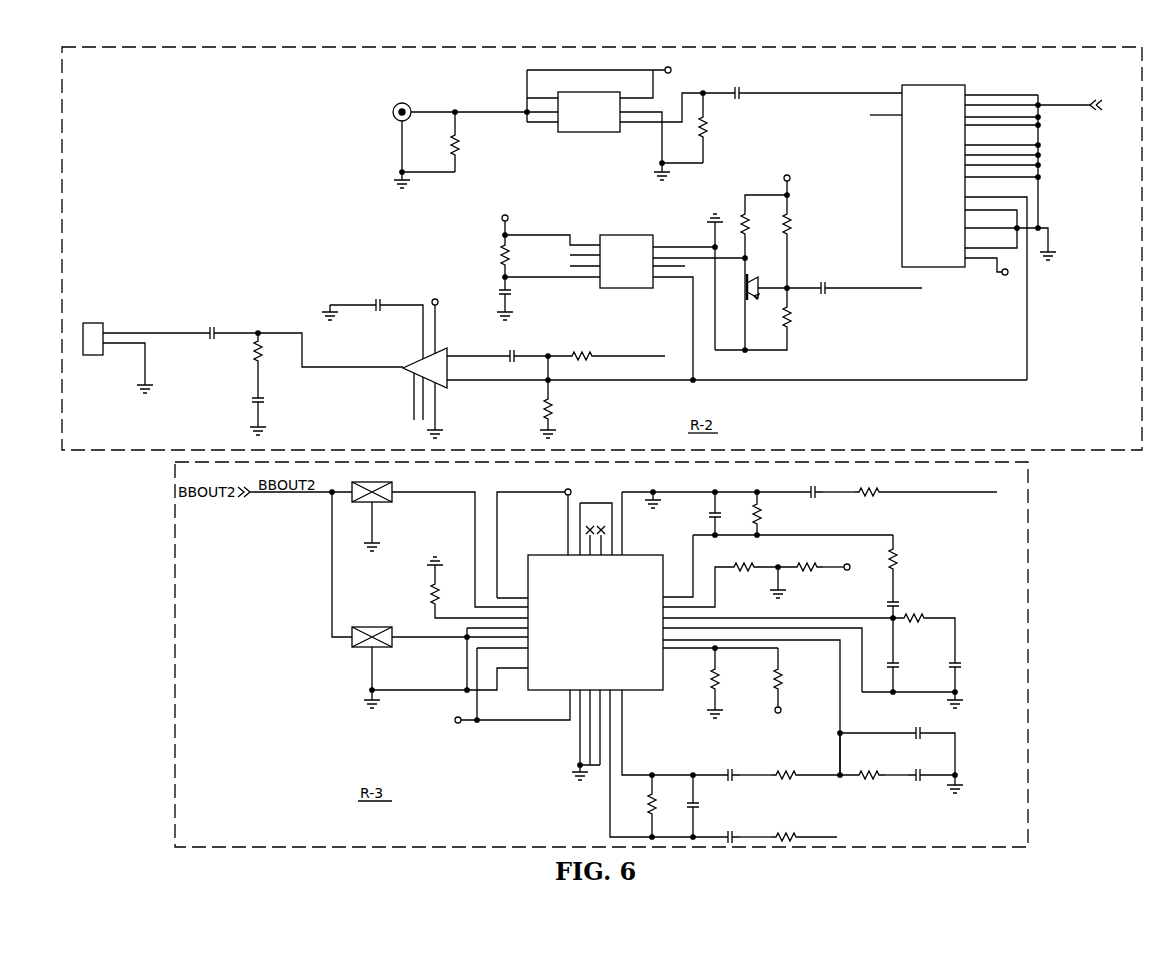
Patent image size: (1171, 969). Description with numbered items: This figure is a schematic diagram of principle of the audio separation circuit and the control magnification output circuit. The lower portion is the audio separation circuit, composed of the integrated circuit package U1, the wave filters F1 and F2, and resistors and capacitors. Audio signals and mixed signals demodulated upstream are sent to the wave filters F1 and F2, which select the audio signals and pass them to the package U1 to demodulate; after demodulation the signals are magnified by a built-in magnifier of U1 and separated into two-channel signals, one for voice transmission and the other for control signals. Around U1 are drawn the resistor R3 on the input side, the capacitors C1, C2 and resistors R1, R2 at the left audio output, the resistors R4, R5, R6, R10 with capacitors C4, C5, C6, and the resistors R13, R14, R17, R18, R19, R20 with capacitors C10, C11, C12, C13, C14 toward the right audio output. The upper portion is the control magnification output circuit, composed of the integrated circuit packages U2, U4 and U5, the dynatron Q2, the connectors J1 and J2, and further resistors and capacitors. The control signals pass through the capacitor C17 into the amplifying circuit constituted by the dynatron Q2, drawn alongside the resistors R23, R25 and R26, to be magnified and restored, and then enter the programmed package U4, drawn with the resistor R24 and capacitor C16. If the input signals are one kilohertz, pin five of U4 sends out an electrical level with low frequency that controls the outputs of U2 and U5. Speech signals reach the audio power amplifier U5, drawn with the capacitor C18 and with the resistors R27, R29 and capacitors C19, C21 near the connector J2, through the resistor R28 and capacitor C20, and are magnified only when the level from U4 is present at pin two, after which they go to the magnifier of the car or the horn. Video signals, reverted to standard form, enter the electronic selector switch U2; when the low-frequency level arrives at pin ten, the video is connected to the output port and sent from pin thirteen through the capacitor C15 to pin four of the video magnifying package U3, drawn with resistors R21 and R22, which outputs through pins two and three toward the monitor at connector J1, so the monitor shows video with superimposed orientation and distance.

The monitor video jack J1 is at (438, 135).
The resistor R21 is at (471, 141).
The video magnified integrated circuit package U3 is at (614, 122).
The resistor R22 is at (719, 127).
The capacitor C15 is at (802, 85).
The integrated circuit package U2 is at (1004, 223).
The resistor R23 is at (764, 273).
The resistor R25 is at (800, 223).
The dynatron Q2 is at (754, 287).
The resistor R26 is at (769, 319).
The capacitor C17 is at (854, 280).
The integrated circuit package U4 is at (625, 298).
The resistor R24 is at (517, 239).
The capacitor C16 is at (519, 301).
The alarm jack J2 is at (137, 348).
The capacitor C19 is at (300, 339).
The resistor R27 is at (275, 361).
The capacitor C21 is at (274, 412).
The capacitor C18 is at (372, 321).
The integrated circuit package U5 is at (688, 359).
The capacitor C20 is at (532, 348).
The resistor R28 is at (616, 347).
The resistor R29 is at (562, 397).
The wave filter F1 is at (434, 536).
The wave filter F2 is at (434, 650).
The resistor R3 is at (477, 587).
The integrated circuit package U1 is at (650, 652).
The capacitor C2 is at (725, 513).
The resistor R2 is at (793, 513).
The capacitor C1 is at (828, 482).
The resistor R1 is at (926, 481).
The resistor R6 is at (761, 571).
The resistor R4 is at (840, 565).
The resistor R5 is at (904, 564).
The capacitor C4 is at (903, 605).
The resistor R10 is at (924, 634).
The capacitor C5 is at (904, 656).
The capacitor C6 is at (922, 681).
The resistor R13 is at (729, 682).
The resistor R14 is at (785, 691).
The capacitor C10 is at (896, 742).
The capacitor C11 is at (711, 766).
The resistor R17 is at (813, 765).
The resistor R18 is at (881, 765).
The capacitor C12 is at (934, 772).
The resistor R19 is at (668, 807).
The capacitor C13 is at (707, 807).
The capacitor C14 is at (745, 829).
The resistor R20 is at (837, 828).